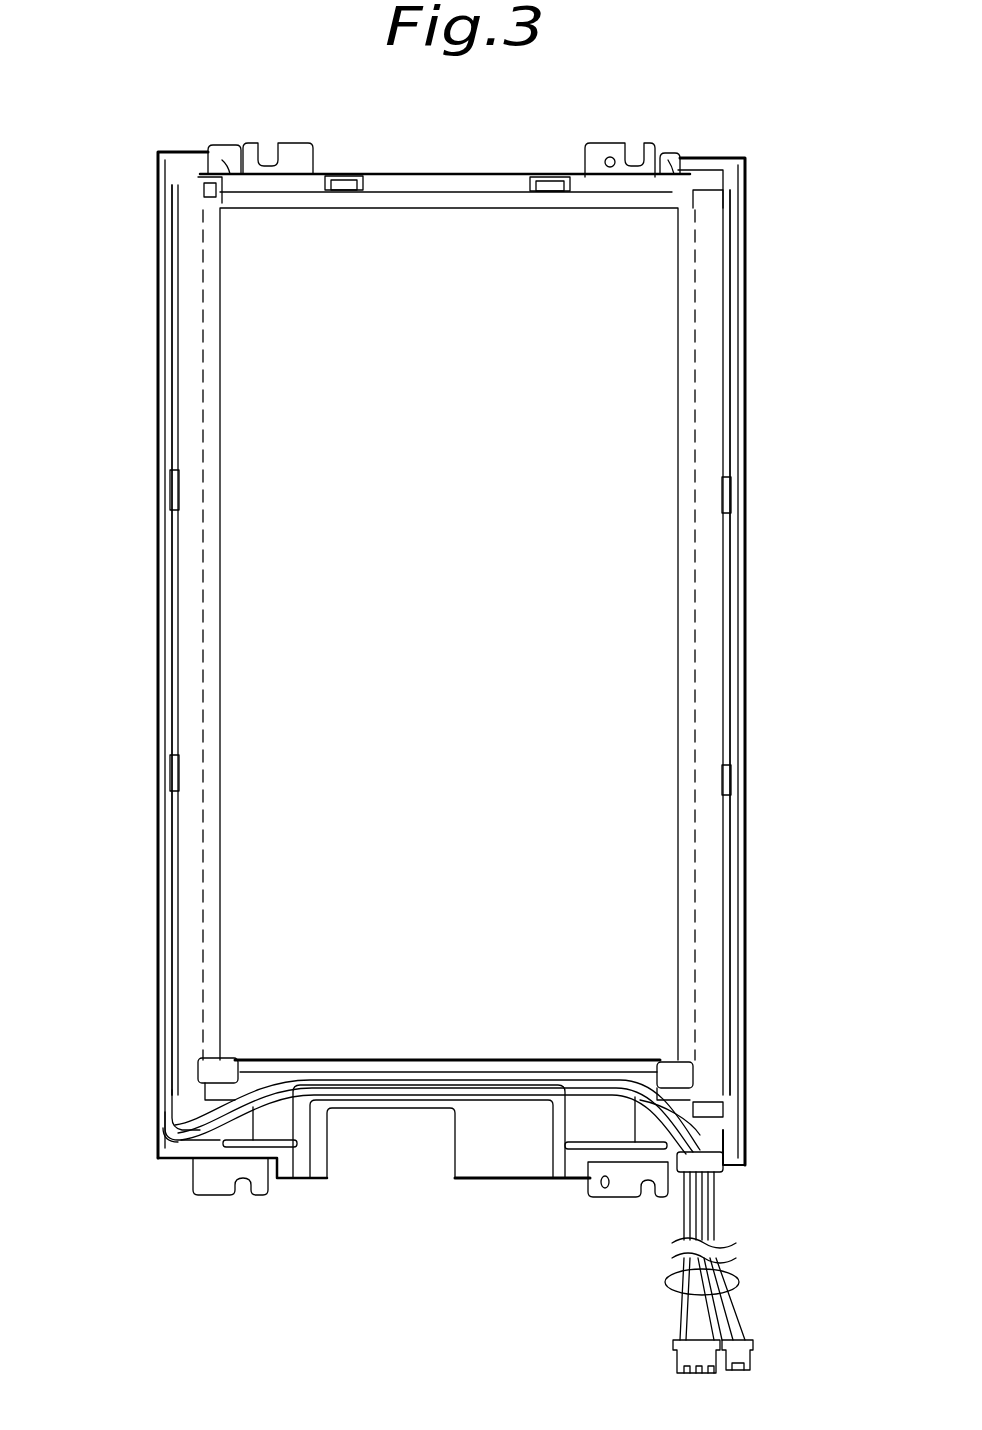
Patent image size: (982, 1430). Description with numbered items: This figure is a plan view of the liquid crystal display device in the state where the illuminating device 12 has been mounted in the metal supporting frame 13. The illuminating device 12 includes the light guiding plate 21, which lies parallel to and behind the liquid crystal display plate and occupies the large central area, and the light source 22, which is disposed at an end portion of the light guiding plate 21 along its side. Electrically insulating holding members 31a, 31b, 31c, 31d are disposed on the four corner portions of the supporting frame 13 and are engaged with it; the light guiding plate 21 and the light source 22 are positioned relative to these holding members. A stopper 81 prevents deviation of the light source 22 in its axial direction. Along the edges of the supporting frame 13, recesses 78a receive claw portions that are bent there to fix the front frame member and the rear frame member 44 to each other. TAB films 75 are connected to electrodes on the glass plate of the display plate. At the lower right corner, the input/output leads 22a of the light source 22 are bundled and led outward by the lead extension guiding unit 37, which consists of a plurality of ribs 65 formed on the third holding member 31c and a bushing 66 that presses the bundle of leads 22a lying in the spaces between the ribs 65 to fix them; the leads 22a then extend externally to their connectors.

The light guiding plate 21 is at (108, 172).
The illuminating device 12 is at (451, 222).
The supporting frame 13 is at (758, 230).
The light source 22 is at (195, 388).
The input/output leads 22a is at (738, 1286).
The holding member 31a is at (226, 172).
The holding member 31b is at (205, 1070).
The third holding member 31c is at (688, 1075).
The holding member 31d is at (675, 170).
The lead extension guiding unit 37 is at (785, 1112).
The rear frame member 44 is at (470, 1138).
The ribs 65 is at (745, 1132).
The bushing 66 is at (728, 1172).
The TAB film 75 is at (185, 838).
The recesses 78a is at (345, 176).
The stopper 81 is at (162, 1125).